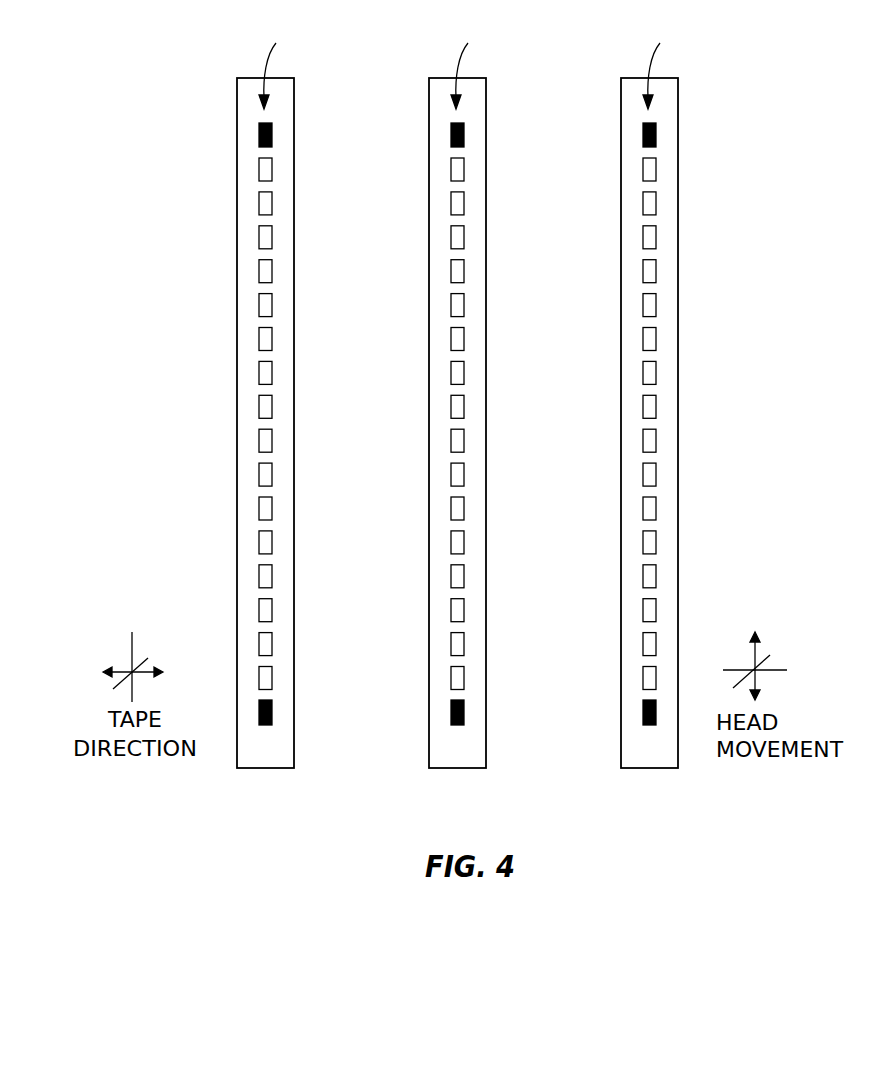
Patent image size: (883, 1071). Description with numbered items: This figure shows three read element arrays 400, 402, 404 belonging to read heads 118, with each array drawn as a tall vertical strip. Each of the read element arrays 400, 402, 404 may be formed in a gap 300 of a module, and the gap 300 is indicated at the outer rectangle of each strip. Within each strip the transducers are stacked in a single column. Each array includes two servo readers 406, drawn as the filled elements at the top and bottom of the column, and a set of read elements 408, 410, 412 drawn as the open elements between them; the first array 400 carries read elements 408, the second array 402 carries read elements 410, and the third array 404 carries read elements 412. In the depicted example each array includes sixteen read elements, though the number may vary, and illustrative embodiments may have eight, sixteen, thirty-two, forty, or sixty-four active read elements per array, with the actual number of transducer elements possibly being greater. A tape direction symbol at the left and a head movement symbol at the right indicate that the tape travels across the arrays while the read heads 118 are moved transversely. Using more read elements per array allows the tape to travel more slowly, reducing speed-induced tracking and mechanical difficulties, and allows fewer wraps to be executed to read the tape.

The gap 300 is at (237, 90).
The read element array 400 is at (272, 65).
The read element array 402 is at (464, 65).
The read element array 404 is at (656, 65).
The servo reader 406 is at (272, 132).
The read element 408 is at (272, 166).
The read element 410 is at (464, 164).
The read element 412 is at (656, 164).
The read head 118 is at (182, 360).